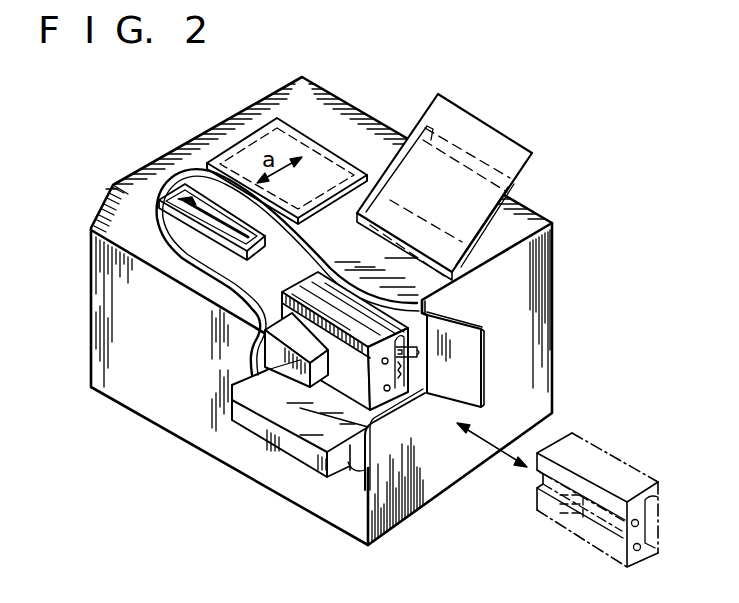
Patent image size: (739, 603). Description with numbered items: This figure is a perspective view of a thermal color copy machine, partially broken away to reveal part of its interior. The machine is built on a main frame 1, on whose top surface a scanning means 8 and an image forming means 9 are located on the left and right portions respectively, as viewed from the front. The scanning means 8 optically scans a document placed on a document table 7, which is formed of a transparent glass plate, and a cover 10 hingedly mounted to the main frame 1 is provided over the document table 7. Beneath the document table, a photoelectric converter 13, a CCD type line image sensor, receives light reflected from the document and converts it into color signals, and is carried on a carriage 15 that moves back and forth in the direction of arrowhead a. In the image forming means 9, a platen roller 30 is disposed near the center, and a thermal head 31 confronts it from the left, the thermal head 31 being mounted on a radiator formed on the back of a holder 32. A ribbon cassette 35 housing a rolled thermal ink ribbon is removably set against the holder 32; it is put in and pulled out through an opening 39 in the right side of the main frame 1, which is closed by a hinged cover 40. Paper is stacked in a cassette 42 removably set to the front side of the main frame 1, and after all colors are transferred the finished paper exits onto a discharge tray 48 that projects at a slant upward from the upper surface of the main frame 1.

The main frame 1 is at (543, 254).
The document table 7 is at (237, 152).
The scanning means 8 is at (185, 232).
The image forming means 9 is at (328, 393).
The cover 10 is at (340, 162).
The photoelectric converter 13 is at (232, 244).
The carriage 15 is at (263, 243).
The platen roller 30 is at (428, 338).
The thermal head 31 is at (415, 375).
The holder 32 is at (267, 350).
The ribbon cassette 35 is at (327, 283).
The opening 39 is at (405, 417).
The cover 40 is at (472, 352).
The cassette 42 is at (253, 422).
The discharge tray 48 is at (507, 145).